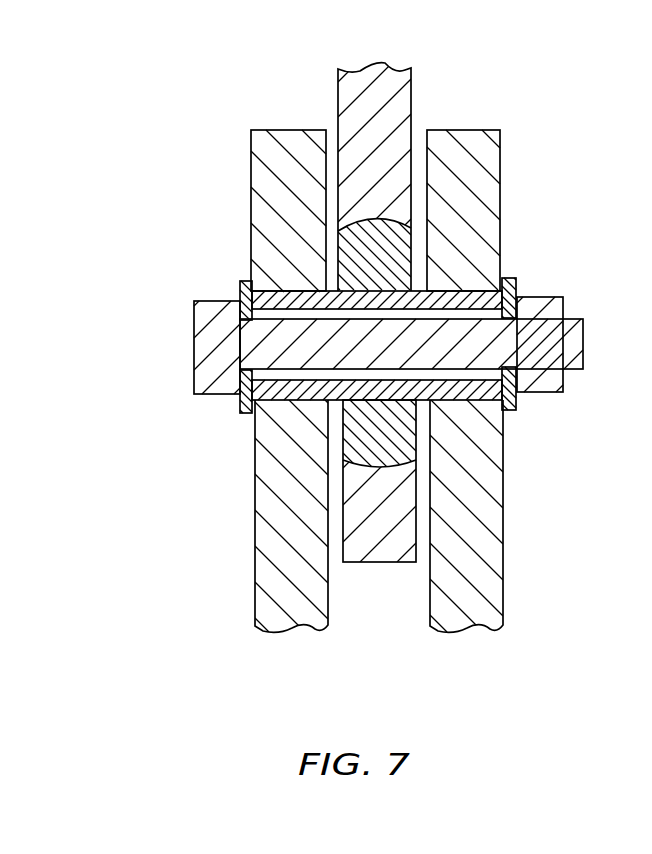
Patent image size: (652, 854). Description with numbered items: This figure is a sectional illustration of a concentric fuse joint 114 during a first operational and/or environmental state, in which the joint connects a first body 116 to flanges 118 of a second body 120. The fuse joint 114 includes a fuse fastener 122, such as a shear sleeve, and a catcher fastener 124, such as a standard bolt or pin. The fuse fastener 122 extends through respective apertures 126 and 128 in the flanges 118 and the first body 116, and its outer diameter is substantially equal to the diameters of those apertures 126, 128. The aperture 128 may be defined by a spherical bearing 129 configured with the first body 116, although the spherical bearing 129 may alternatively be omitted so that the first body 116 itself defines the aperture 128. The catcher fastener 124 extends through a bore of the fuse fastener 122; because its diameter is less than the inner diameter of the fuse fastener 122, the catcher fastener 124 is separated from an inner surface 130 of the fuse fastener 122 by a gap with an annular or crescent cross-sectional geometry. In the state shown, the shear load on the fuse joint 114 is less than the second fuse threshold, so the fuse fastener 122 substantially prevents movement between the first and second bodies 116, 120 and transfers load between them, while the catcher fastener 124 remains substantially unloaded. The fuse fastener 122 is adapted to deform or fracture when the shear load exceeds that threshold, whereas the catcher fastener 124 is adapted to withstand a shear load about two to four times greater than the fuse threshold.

The concentric fuse joint 114 is at (166, 436).
The first body 116 is at (413, 80).
The flanges 118 is at (282, 130).
The second body 120 is at (265, 650).
The fuse fastener 122 is at (480, 292).
The catcher fastener 124 is at (584, 338).
The apertures 126 is at (292, 400).
The aperture 128 is at (385, 405).
The spherical bearing 129 is at (411, 250).
The inner surface 130 is at (280, 310).